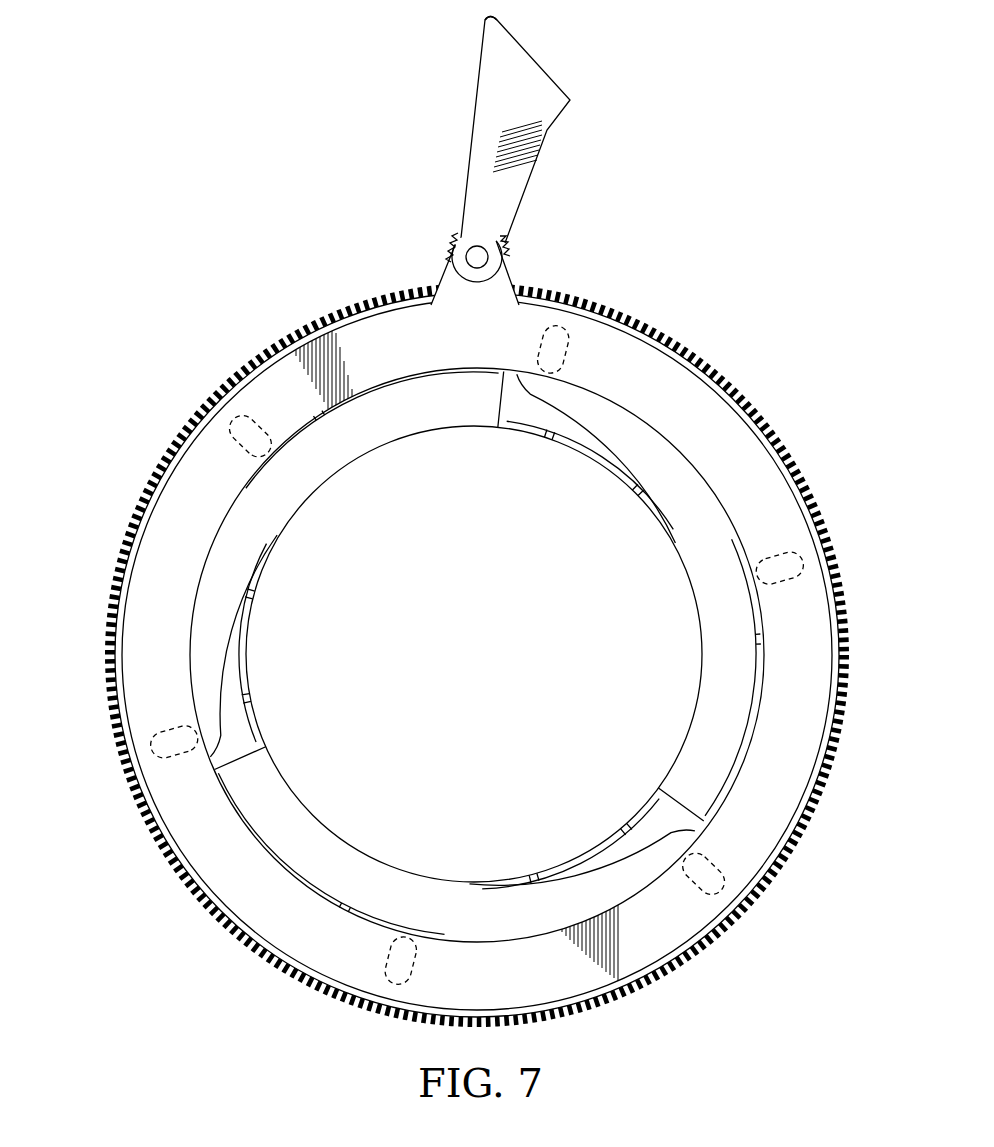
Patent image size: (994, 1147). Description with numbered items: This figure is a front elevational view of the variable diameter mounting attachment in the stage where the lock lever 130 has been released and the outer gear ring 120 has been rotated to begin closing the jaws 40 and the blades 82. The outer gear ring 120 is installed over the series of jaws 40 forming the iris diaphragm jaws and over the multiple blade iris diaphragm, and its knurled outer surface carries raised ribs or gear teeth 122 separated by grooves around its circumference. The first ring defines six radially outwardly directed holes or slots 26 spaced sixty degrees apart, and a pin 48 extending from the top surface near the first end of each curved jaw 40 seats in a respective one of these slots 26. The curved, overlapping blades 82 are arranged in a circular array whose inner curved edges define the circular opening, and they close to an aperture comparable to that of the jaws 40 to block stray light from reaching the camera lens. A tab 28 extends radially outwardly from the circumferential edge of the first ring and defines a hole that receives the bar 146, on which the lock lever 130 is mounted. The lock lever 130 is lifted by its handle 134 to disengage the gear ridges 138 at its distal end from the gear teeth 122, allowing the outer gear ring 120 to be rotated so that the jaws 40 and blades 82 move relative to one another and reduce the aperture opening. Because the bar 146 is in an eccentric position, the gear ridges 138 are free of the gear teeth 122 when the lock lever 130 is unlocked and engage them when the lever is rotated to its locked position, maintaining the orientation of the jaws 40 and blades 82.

The holes or slots 26 is at (795, 556).
The tab 28 is at (470, 273).
The jaws 40 is at (713, 755).
The pins 48 is at (173, 745).
The blades 82 is at (584, 440).
The outer gear ring 120 is at (236, 384).
The gear teeth 122 is at (670, 338).
The lock lever 130 is at (492, 153).
The handle 134 is at (487, 28).
The gear ridges 138 is at (447, 258).
The bar 146 is at (480, 256).